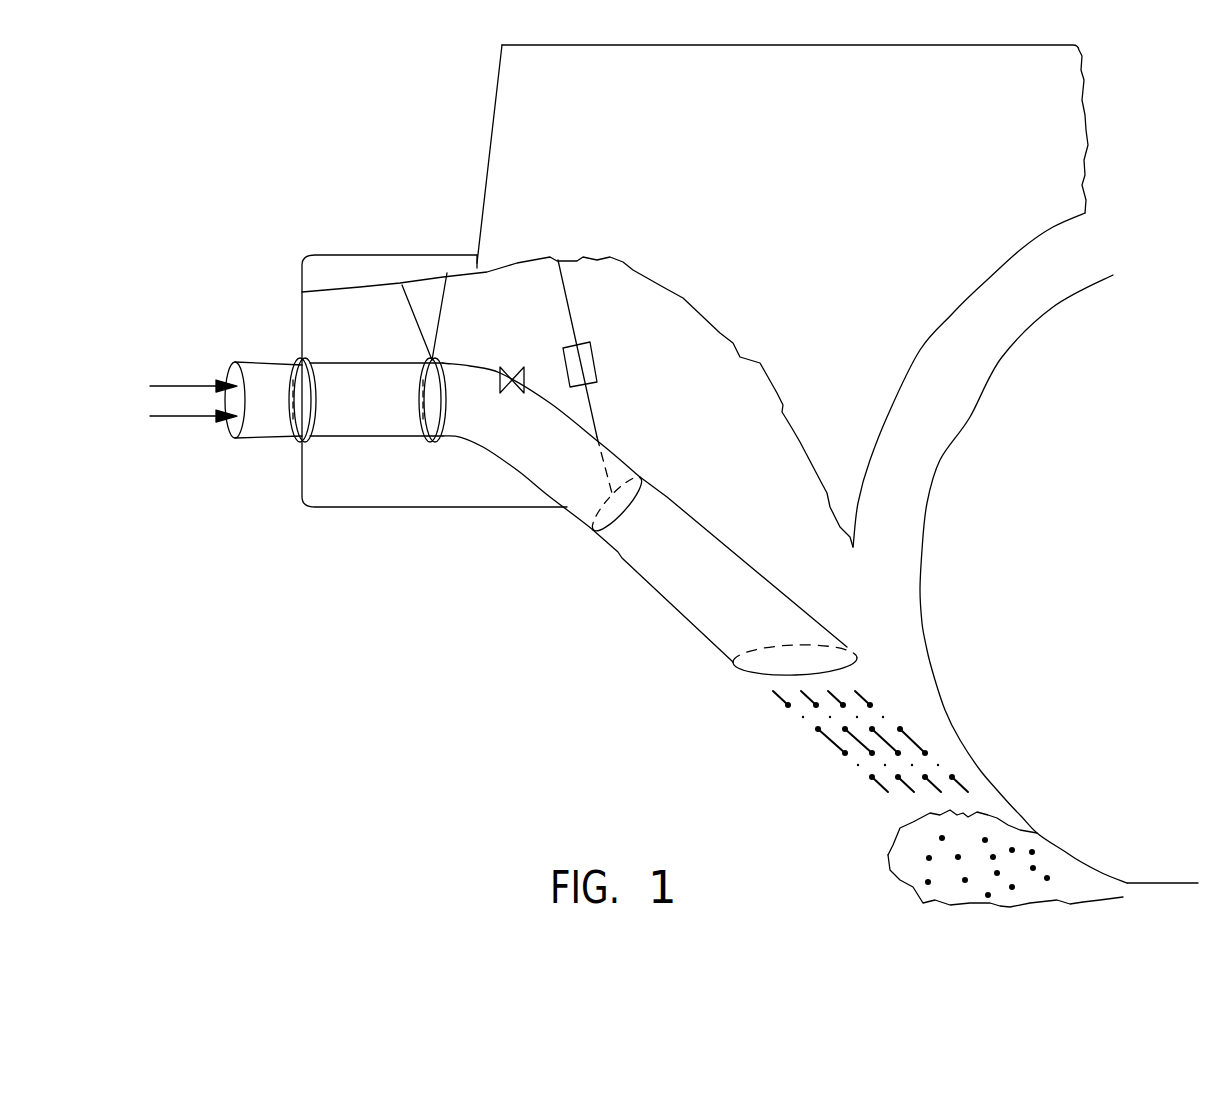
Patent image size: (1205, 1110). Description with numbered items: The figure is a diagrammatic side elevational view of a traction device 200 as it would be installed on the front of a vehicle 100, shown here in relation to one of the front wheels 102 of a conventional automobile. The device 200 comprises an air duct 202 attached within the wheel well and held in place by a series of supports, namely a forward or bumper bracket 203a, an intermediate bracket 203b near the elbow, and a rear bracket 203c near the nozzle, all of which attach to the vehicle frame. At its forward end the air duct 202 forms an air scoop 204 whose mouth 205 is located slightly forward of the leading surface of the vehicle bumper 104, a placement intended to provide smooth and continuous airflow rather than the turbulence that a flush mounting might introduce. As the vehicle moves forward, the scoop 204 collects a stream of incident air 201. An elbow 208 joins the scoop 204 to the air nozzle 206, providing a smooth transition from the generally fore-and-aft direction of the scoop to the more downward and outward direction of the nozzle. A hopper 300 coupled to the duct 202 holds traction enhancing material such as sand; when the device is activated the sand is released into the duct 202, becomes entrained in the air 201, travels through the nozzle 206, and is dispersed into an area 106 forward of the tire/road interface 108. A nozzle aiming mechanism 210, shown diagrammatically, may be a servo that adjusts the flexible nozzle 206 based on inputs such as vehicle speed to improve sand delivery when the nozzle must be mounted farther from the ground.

The vehicle 100 is at (490, 148).
The front wheels 102 is at (1010, 621).
The vehicle bumper 104 is at (313, 504).
The area 106 is at (905, 860).
The tire/road interface 108 is at (1163, 886).
The traction device 200 is at (383, 327).
The incident air 201 is at (197, 414).
The air duct 202 is at (496, 443).
The forward bracket 203a is at (306, 440).
The intermediate bracket 203b is at (450, 303).
The rear bracket 203c is at (573, 312).
The air scoop 204 is at (264, 364).
The mouth 205 is at (228, 367).
The air nozzle 206 is at (675, 612).
The elbow 208 is at (525, 469).
The nozzle aiming mechanism 210 is at (599, 362).
The hopper 300 is at (512, 367).